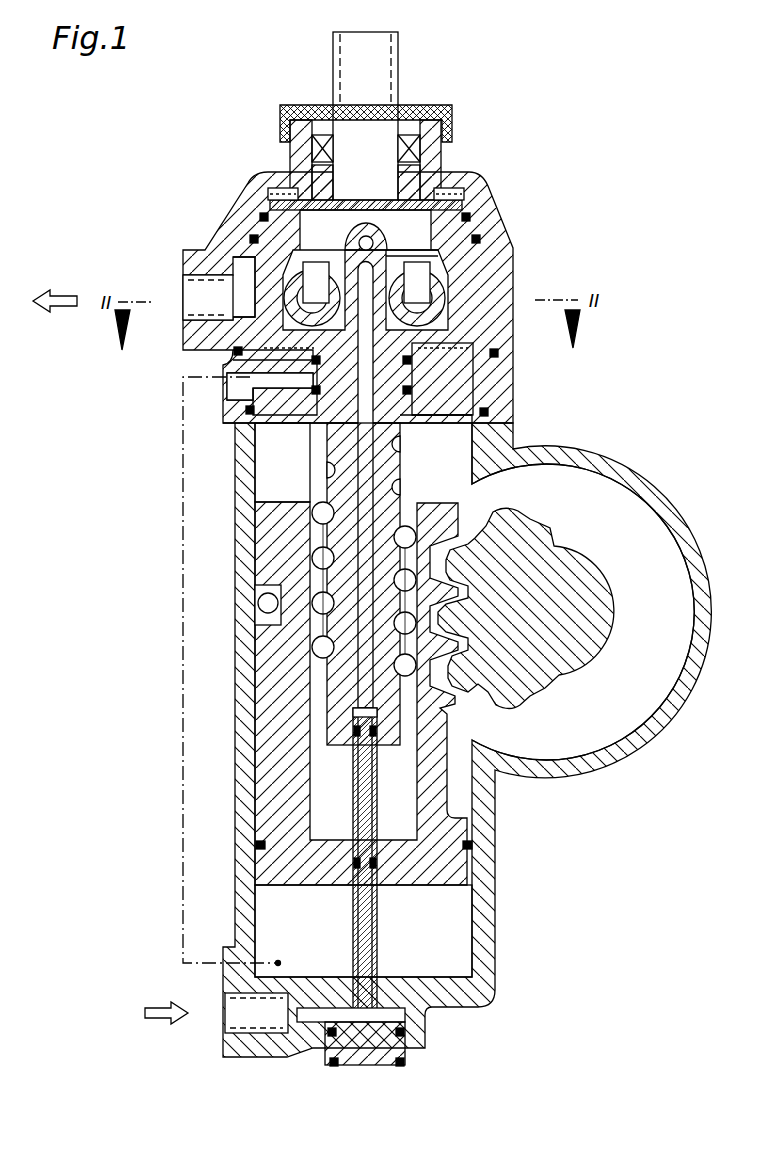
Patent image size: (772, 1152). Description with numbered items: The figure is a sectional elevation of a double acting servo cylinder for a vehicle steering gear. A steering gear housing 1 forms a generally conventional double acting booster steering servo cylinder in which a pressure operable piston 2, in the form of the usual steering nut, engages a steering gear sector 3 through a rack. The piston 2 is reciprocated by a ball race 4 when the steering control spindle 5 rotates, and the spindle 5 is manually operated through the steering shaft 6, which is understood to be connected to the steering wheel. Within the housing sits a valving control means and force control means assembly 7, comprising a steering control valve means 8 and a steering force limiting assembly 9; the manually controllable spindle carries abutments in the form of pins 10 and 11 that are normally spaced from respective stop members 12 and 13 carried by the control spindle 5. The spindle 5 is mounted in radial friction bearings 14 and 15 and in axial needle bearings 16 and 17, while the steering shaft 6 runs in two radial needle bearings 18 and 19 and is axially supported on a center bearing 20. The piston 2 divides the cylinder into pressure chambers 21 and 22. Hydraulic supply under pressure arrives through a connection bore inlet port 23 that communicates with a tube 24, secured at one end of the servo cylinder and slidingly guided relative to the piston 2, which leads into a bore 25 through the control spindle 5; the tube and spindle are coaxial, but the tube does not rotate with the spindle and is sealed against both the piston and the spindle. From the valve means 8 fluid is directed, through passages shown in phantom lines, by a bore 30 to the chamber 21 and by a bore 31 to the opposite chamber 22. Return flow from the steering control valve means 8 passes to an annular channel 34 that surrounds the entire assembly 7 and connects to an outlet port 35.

The steering gear housing 1 is at (485, 957).
The pressure operable piston 2 is at (278, 652).
The steering gear sector 3 is at (517, 657).
The ball race 4 is at (262, 605).
The steering control spindle 5 is at (340, 535).
The steering shaft 6 is at (375, 78).
The valving control means and force control means assembly 7 is at (98, 159).
The steering control valve means 8 is at (300, 300).
The steering force limiting assembly 9 is at (448, 292).
The pin 10 is at (300, 264).
The pin 11 is at (412, 292).
The stop member 12 is at (257, 214).
The stop member 13 is at (378, 243).
The radial friction bearing 14 is at (255, 417).
The radial friction bearing 15 is at (438, 268).
The axial needle bearing 16 is at (290, 380).
The axial needle bearing 17 is at (410, 262).
The radial needle bearing 18 is at (265, 227).
The radial needle bearing 19 is at (407, 185).
The center bearing 20 is at (352, 232).
The pressure chamber 21 is at (432, 900).
The pressure chamber 22 is at (428, 445).
The connection bore inlet port 23 is at (250, 1017).
The tube 24 is at (377, 913).
The bore 25 is at (360, 683).
The bore 30 is at (183, 520).
The bore 31 is at (380, 387).
The annular channel 34 is at (250, 320).
The outlet port 35 is at (202, 298).